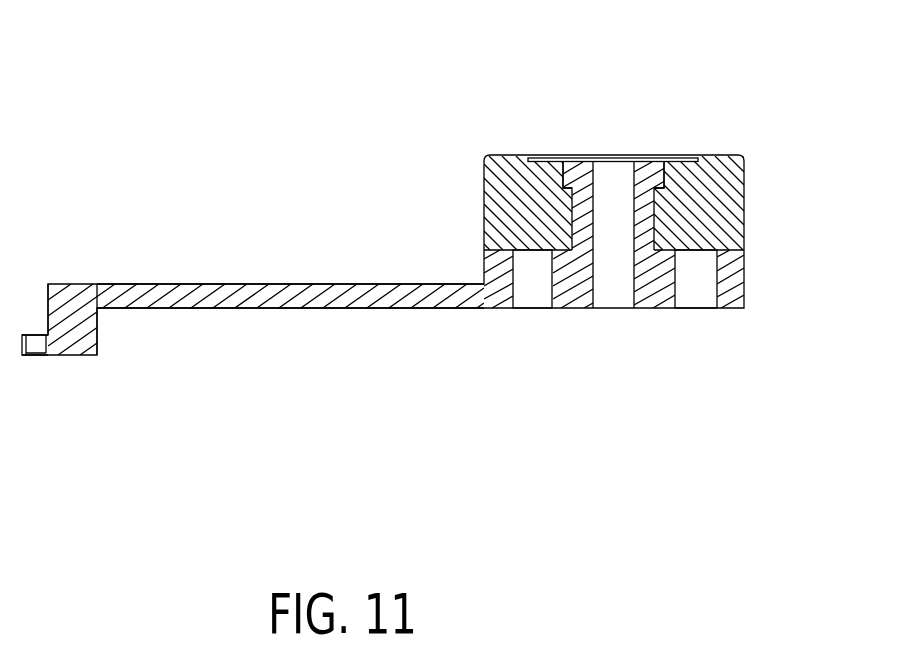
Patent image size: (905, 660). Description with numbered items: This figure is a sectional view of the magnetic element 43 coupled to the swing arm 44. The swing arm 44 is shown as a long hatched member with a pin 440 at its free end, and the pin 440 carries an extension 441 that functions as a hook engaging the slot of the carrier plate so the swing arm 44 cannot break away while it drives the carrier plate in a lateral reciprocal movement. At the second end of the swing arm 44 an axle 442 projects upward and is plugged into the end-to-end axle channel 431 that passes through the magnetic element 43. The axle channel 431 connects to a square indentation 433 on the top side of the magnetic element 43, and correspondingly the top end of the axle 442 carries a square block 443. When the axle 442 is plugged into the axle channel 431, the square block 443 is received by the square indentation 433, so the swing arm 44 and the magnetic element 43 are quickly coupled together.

The magnetic element 43 is at (730, 200).
The axle channel 431 is at (583, 225).
The square indentation 433 is at (578, 162).
The swing arm 44 is at (342, 295).
The pin 440 is at (80, 317).
The extension 441 is at (58, 349).
The axle 442 is at (648, 212).
The square block 443 is at (653, 165).